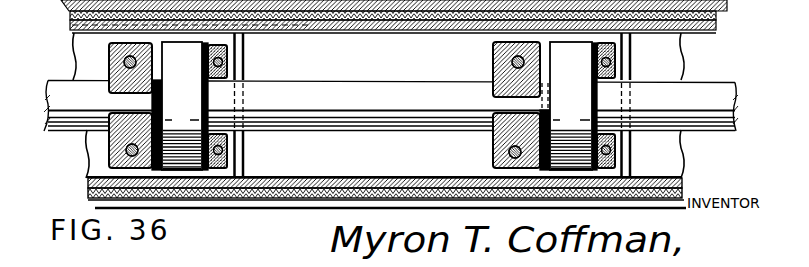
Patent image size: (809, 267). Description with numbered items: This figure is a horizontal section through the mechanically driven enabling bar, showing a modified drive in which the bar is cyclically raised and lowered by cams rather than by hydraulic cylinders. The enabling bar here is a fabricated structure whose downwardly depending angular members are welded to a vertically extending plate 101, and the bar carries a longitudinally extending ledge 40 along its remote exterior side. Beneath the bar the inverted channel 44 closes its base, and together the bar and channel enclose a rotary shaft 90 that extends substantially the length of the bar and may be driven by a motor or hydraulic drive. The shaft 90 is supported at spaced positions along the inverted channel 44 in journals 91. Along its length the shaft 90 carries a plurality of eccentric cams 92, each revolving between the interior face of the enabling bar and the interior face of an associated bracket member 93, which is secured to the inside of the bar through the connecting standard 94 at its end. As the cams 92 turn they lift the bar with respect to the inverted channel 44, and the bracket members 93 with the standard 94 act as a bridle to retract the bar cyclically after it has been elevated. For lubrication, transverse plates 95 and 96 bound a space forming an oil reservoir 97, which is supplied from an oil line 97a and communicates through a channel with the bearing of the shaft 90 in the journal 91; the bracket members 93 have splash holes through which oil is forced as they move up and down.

The vertically extending plate 101 is at (64, 12).
The ledge 40 is at (291, 211).
The inverted channel 44 is at (328, 189).
The rotary shaft 90 is at (61, 90).
The journal 91 is at (109, 150).
The eccentric cam 92 is at (493, 172).
The bracket member 93 is at (625, 172).
The connecting standard 94 is at (228, 68).
The transverse plate 95 is at (118, 42).
The transverse plate 96 is at (238, 46).
The oil reservoir 97 is at (190, 37).
The oil line 97a is at (318, 32).